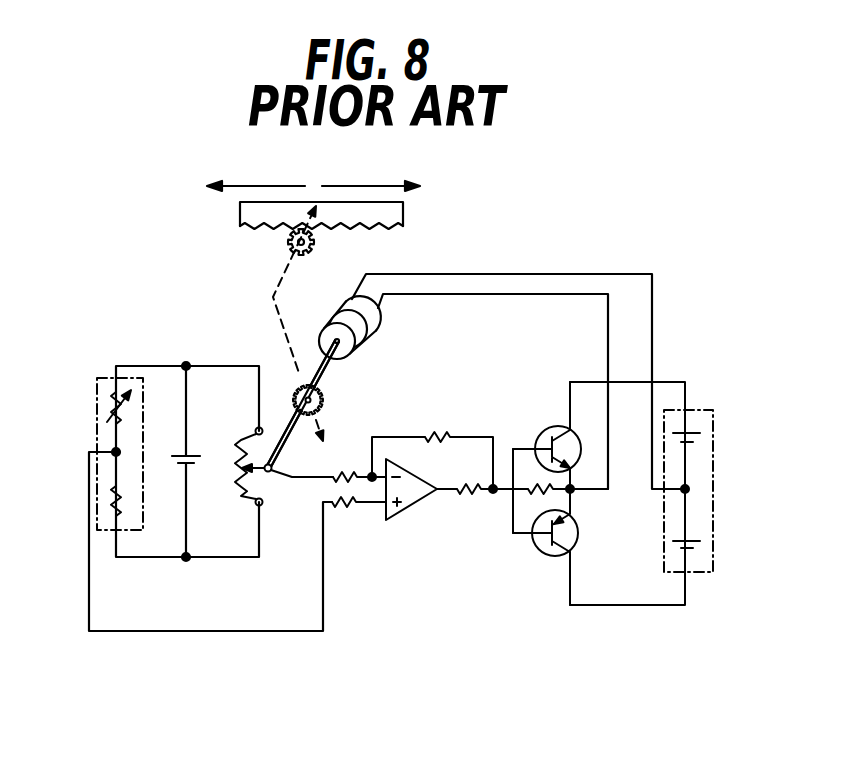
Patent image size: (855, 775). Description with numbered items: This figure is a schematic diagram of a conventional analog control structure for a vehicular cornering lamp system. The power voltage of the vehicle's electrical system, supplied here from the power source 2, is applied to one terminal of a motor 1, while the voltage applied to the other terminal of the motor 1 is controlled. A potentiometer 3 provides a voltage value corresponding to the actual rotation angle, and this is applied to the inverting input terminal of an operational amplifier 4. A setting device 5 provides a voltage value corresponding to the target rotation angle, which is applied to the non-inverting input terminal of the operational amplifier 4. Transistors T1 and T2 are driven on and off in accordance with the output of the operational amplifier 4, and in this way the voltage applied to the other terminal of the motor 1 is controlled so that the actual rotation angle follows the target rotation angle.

The motor 1 is at (375, 325).
The battery power supply 2 is at (718, 460).
The potentiometer 3 is at (265, 483).
The operational amplifier 4 is at (408, 509).
The setting device 5 is at (97, 402).
The transistor T1 is at (559, 435).
The transistor T2 is at (566, 547).